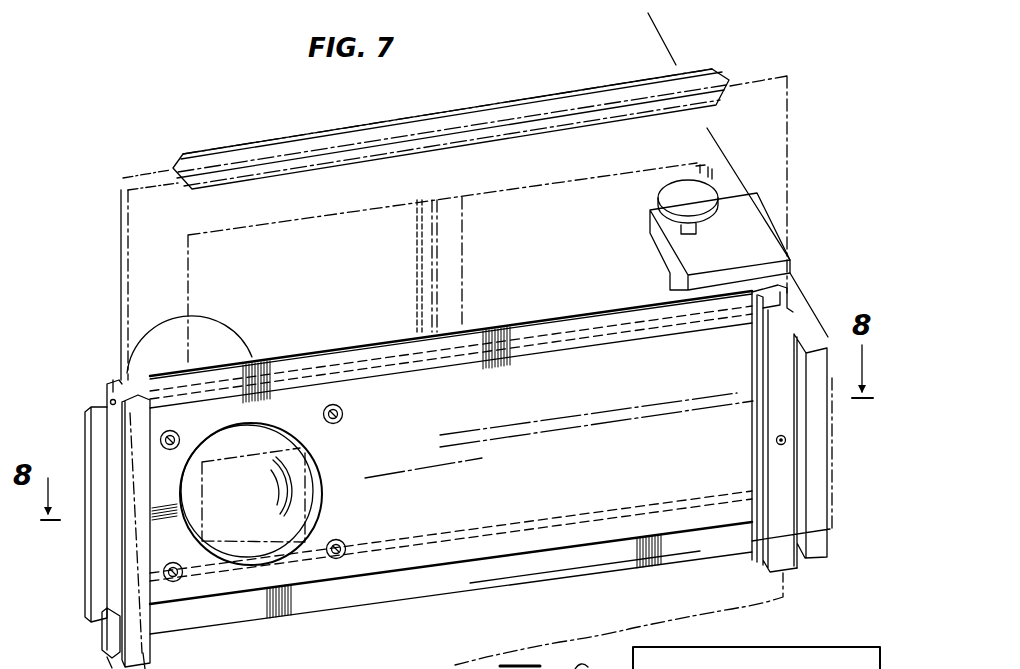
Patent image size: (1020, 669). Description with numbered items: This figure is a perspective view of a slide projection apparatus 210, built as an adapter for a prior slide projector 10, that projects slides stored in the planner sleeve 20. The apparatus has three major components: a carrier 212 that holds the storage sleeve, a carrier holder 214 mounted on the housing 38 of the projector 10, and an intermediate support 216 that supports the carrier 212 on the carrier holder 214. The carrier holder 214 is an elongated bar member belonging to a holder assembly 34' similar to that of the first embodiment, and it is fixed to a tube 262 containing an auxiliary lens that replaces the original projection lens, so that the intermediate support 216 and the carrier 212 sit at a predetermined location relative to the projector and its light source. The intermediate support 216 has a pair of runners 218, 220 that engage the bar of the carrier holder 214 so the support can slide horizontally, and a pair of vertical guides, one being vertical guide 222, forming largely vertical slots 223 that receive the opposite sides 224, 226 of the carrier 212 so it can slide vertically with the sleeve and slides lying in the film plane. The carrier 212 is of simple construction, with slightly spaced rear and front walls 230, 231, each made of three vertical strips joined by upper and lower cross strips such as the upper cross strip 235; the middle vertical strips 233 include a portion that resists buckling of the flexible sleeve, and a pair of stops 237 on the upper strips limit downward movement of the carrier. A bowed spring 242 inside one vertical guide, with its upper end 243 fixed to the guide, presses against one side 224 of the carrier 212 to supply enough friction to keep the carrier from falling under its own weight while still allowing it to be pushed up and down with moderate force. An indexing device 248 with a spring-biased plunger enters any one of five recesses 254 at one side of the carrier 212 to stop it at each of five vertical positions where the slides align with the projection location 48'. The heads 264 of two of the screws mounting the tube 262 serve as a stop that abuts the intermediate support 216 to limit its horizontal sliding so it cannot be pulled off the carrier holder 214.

The projector 10 is at (688, 43).
The planner sleeve 20 is at (377, 143).
The holder assembly 34' is at (748, 233).
The housing 38 is at (670, 22).
The projection location 48' is at (294, 494).
The slide projection apparatus 210 is at (172, 149).
The carrier 212 is at (119, 191).
The carrier holder 214 is at (89, 428).
The intermediate support 216 is at (105, 556).
The runner 218 is at (97, 392).
The runner 220 is at (104, 626).
The vertical guide 222 is at (787, 503).
The slot 223 is at (773, 297).
The side of carrier 224 is at (120, 225).
The side of carrier 226 is at (787, 167).
The rear wall 230 is at (430, 283).
The front wall 231 is at (416, 244).
The middle vertical strip 233 is at (126, 385).
The upper cross strip 235 is at (450, 264).
The stop 237 is at (307, 167).
The spring 242 is at (140, 582).
The upper end of spring 243 is at (113, 378).
The indexing device 248 is at (790, 441).
The recess 254 is at (770, 233).
The tube 262 is at (170, 317).
The screw head 264 is at (331, 403).